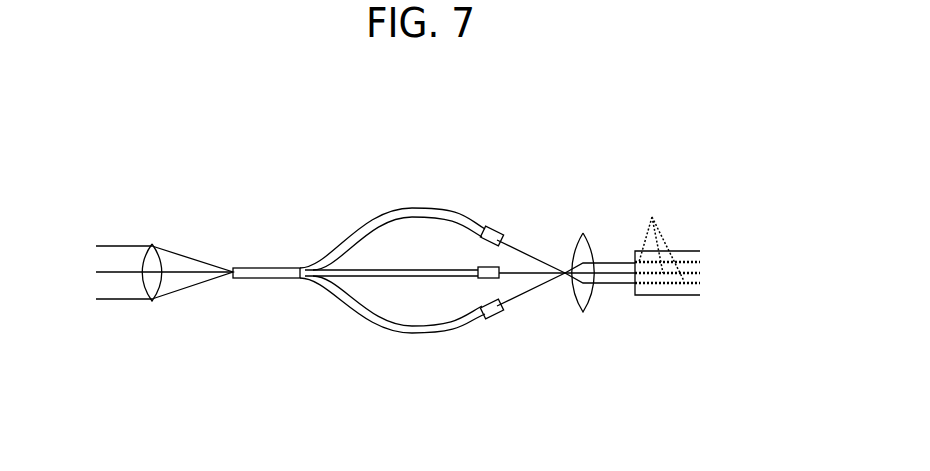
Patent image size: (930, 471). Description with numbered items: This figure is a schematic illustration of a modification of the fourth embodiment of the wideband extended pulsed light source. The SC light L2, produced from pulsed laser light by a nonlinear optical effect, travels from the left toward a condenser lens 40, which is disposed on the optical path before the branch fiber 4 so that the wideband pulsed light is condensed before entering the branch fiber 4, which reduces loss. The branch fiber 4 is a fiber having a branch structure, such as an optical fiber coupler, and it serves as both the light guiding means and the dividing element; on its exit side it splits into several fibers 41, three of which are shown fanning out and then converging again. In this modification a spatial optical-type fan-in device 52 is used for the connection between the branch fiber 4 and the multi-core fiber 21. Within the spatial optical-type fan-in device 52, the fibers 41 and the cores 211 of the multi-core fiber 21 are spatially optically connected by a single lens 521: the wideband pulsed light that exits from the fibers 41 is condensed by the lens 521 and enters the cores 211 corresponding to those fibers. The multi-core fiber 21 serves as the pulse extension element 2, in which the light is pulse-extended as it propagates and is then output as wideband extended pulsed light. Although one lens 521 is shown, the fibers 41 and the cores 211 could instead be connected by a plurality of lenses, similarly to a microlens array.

The SC light L2 is at (112, 300).
The condenser lens 40 is at (152, 302).
The branch fiber 4 is at (292, 278).
The fibers 41 is at (417, 218).
The spatial optical-type fan-in device 52 is at (566, 272).
The lens 521 is at (577, 311).
The pulse extension element 2 is at (696, 268).
The multi-core fiber 21 is at (665, 296).
The cores 211 is at (666, 235).